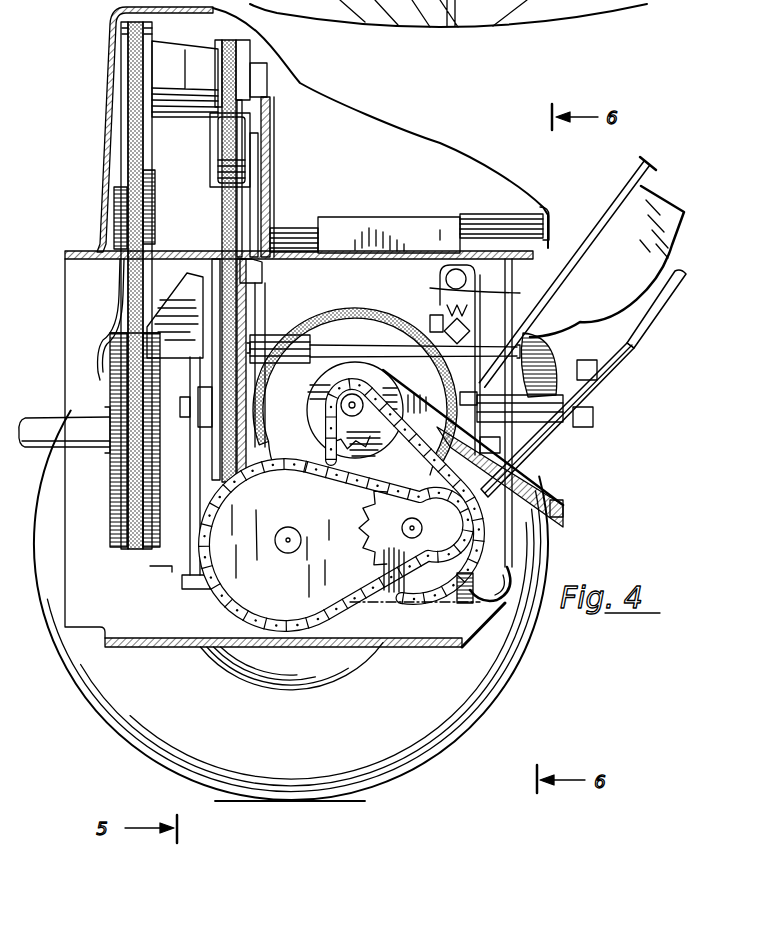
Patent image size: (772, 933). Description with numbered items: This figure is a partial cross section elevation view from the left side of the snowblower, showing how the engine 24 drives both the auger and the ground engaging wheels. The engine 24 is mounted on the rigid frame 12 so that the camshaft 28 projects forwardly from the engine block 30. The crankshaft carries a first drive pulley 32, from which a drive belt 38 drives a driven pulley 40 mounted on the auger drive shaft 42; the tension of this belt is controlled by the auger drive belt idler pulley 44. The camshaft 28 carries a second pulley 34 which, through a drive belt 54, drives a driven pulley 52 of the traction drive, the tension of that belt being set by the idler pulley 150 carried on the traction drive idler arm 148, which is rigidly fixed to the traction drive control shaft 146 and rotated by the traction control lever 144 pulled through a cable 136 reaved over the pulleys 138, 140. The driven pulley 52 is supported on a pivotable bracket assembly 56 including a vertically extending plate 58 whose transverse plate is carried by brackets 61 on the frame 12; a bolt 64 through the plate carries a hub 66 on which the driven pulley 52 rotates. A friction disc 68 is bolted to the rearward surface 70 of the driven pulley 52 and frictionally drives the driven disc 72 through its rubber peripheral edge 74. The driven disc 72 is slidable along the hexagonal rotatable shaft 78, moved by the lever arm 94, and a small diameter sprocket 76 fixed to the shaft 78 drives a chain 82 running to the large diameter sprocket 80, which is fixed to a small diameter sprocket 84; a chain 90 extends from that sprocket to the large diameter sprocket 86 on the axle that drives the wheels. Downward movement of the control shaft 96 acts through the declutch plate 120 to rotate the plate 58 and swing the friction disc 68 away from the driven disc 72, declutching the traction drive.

The rigid frame 12 is at (158, 648).
The engine 24 is at (292, 80).
The camshaft 28 is at (260, 72).
The engine block 30 is at (412, 132).
The first drive pulley 32 is at (126, 30).
The second pulley 34 is at (270, 100).
The drive belt 38 is at (133, 152).
The driven pulley 40 is at (112, 495).
The auger drive shaft 42 is at (45, 430).
The auger drive belt idler pulley 44 is at (118, 210).
The driven pulley 52 is at (268, 278).
The drive belt 54 is at (236, 195).
The pivotable bracket assembly 56 is at (150, 569).
The vertically extending plate 58 is at (192, 522).
The brackets 61 is at (184, 270).
The bolt 64 is at (186, 406).
The hub 66 is at (205, 420).
The friction disc 68 is at (258, 300).
The rearward surface 70 is at (272, 476).
The driven disc 72 is at (352, 330).
The peripheral edge 74 is at (380, 305).
The small diameter sprocket 76 is at (340, 410).
The rotatable shaft 78 is at (378, 395).
The large diameter sprocket 80 is at (365, 492).
The chain 82 is at (490, 548).
The small diameter sprocket 84 is at (380, 543).
The large diameter sprocket 86 is at (290, 596).
The chain 90 is at (225, 597).
The lever arm 94 is at (448, 13).
The control shaft 96 is at (655, 312).
The declutch plate 120 is at (185, 585).
The cable 136 is at (638, 172).
The pulley 138 is at (527, 322).
The pulley 140 is at (440, 282).
The traction control lever 144 is at (520, 293).
The traction drive control shaft 146 is at (395, 352).
The traction drive idler arm 148 is at (256, 203).
The idler pulley 150 is at (232, 148).